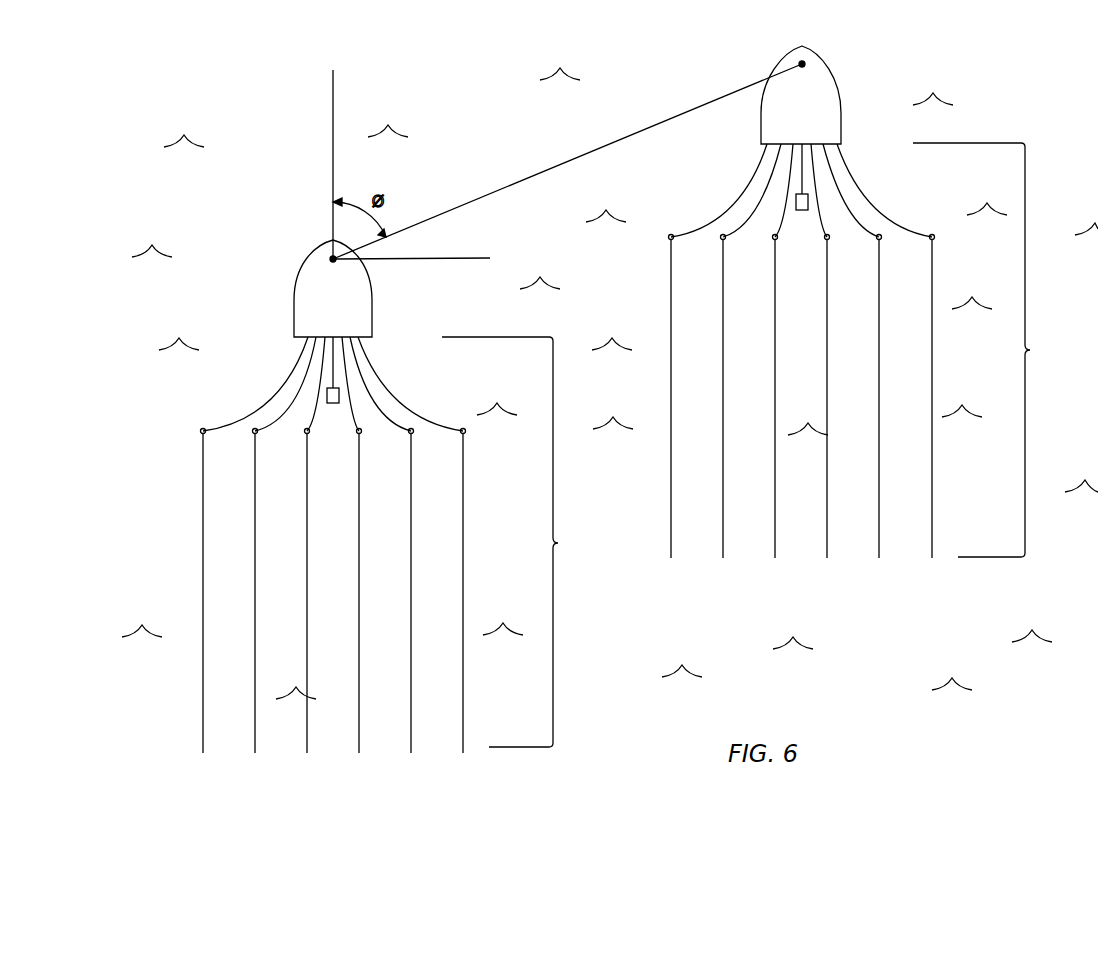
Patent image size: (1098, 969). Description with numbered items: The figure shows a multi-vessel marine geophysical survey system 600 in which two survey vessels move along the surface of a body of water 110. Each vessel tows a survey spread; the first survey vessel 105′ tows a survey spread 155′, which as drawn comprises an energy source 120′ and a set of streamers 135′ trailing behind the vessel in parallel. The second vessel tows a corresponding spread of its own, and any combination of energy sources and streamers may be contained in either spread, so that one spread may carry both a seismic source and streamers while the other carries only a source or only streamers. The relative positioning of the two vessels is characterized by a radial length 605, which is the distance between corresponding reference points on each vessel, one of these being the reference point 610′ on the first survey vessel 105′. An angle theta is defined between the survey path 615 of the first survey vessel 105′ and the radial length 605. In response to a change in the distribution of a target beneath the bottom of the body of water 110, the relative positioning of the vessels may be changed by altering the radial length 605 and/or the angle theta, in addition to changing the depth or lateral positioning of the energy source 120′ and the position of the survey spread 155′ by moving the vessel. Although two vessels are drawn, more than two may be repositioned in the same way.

The multi-vessel marine geophysical survey system 600 is at (227, 102).
The survey path 615 is at (335, 106).
The radial length 605 is at (565, 160).
The reference point 610′ is at (331, 256).
The survey vessel 105′ is at (303, 268).
The energy source 120′ is at (333, 403).
The streamers 135′ is at (203, 577).
The survey spread 155′ is at (558, 543).
The body of water 110 is at (1012, 107).